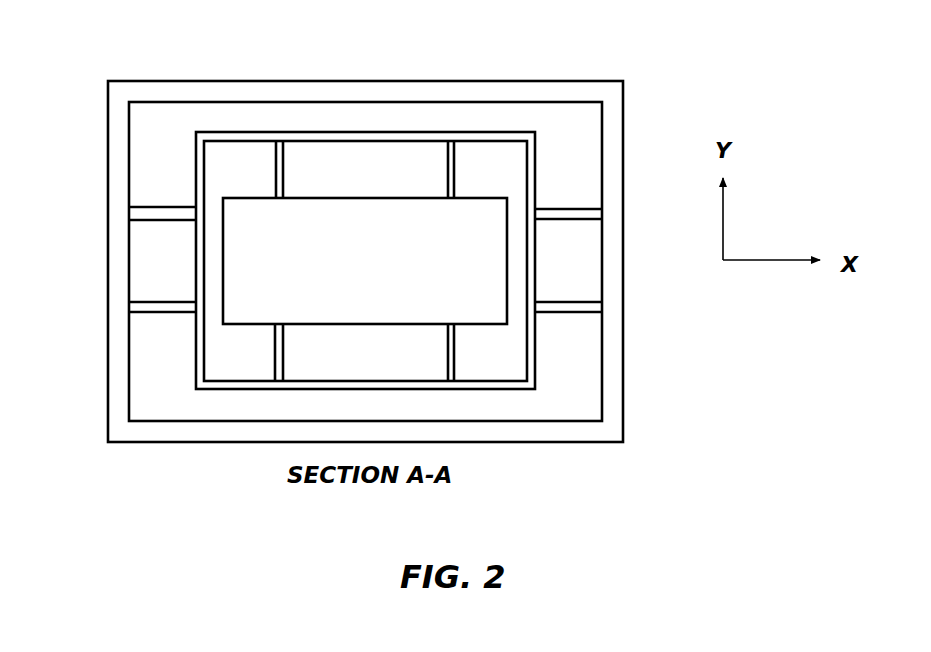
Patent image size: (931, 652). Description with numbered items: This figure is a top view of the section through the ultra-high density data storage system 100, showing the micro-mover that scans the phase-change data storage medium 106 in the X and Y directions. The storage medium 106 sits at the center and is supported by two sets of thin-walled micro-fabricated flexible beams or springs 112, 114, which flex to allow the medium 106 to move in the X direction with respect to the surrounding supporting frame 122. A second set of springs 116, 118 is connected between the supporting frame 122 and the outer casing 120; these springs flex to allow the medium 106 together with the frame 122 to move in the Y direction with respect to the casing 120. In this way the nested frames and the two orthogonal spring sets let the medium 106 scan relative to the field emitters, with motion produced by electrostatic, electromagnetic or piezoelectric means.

The ultra-high density data storage system 100 is at (117, 55).
The phase-change data storage medium 106 is at (391, 273).
The flexible beam 112 is at (284, 165).
The flexible beam 114 is at (455, 183).
The spring 116 is at (568, 303).
The spring 118 is at (559, 212).
The outer casing 120 is at (612, 385).
The supporting frame 122 is at (537, 157).